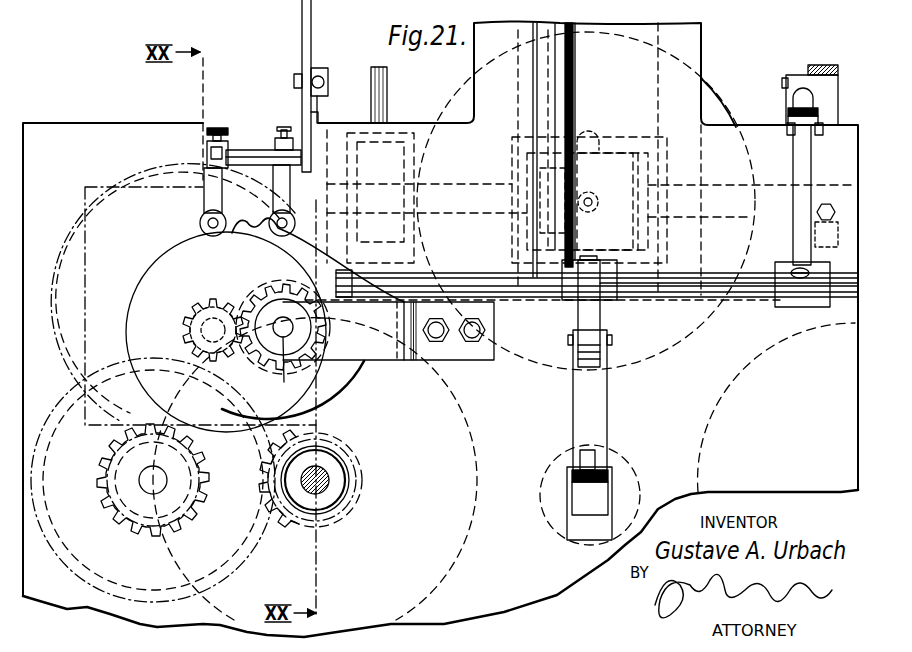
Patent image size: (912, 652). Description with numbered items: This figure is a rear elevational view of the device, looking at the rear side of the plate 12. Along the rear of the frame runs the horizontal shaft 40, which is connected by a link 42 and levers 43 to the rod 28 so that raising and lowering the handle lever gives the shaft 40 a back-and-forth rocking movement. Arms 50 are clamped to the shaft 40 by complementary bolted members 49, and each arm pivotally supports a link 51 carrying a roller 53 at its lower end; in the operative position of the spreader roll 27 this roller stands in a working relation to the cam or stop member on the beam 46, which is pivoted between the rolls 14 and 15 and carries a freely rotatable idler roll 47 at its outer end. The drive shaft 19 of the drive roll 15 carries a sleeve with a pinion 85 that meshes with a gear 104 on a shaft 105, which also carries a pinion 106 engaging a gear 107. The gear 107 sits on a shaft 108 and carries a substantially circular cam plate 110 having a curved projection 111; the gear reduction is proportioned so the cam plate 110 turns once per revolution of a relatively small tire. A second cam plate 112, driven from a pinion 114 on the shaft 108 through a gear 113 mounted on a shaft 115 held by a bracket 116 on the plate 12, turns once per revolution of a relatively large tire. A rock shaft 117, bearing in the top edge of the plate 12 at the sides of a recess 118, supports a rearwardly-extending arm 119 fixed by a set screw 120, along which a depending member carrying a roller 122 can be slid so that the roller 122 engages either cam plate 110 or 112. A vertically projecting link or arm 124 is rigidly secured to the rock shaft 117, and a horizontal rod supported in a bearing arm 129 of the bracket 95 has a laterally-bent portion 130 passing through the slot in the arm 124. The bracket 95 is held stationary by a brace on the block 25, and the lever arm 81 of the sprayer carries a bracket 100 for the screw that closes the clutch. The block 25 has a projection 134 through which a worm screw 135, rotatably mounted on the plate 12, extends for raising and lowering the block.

The plate 12 is at (440, 323).
The roll 14 is at (773, 407).
The drive roll 15 is at (326, 469).
The drive shaft 19 is at (328, 480).
The block 25 is at (589, 185).
The spreader roll 27 is at (586, 201).
The rod 28 is at (581, 161).
The horizontal shaft 40 is at (729, 304).
The link 42 is at (783, 103).
The lever 43 is at (802, 172).
The beam 46 is at (589, 503).
The idler roll 47 is at (602, 495).
The bolted member 49 is at (572, 297).
The arm 50 is at (609, 311).
The link 51 is at (600, 401).
The roller 53 is at (609, 446).
The lever arm 81 is at (391, 96).
The pinion 85 is at (281, 493).
The bracket 95 is at (333, 109).
The bracket 100 is at (318, 260).
The gear 104 is at (154, 480).
The shaft 105 is at (114, 480).
The pinion 106 is at (167, 481).
The gear 107 is at (153, 480).
The shaft 108 is at (218, 310).
The cam plate 110 is at (209, 327).
The curved projection 111 is at (247, 200).
The cam plate 112 is at (300, 390).
The gear 113 is at (283, 338).
The pinion 114 is at (194, 330).
The shaft 115 is at (287, 350).
The bracket 116 is at (388, 353).
The rock shaft 117 is at (263, 146).
The recess 118 is at (268, 121).
The arm 119 is at (189, 155).
The set screw 120 is at (220, 114).
The roller 122 is at (173, 292).
The link or arm 124 is at (287, 86).
The bearing arm 129 is at (333, 82).
The laterally-bent portion 130 is at (283, 70).
The projection 134 is at (521, 192).
The worm screw 135 is at (528, 156).